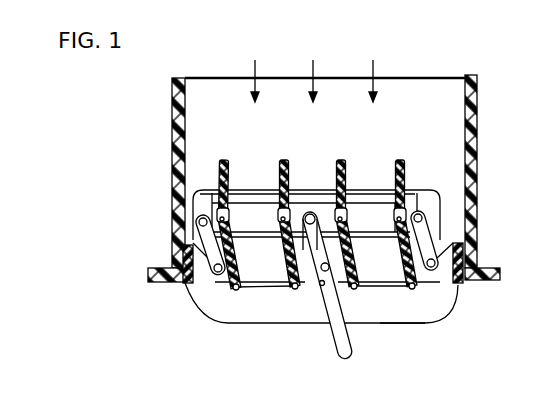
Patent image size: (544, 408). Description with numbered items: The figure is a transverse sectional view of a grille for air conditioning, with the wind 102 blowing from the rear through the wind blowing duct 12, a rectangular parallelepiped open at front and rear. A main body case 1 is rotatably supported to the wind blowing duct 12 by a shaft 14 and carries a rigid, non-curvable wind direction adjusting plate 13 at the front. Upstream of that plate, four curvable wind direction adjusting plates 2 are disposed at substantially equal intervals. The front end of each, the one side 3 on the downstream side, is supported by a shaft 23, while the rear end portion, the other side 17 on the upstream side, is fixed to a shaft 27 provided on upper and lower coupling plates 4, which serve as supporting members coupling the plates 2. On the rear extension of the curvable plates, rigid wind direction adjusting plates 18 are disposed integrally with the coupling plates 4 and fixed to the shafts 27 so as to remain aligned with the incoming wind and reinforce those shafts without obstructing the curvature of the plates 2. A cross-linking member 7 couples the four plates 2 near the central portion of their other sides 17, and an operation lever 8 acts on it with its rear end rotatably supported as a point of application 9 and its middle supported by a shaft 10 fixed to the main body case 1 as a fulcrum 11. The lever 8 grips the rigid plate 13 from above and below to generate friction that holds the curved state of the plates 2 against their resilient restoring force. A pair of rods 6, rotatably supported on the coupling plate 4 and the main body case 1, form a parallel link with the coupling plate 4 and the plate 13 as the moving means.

The main body case 1 is at (455, 290).
The curvable wind direction adjusting plate 2 is at (402, 266).
The one side 3 is at (410, 287).
The coupling plate 4 is at (255, 192).
The rod 6 is at (428, 228).
The cross-linking member 7 is at (360, 192).
The operation lever 8 is at (338, 339).
The point of application 9 is at (311, 212).
The shaft 10 is at (303, 292).
The fulcrum 11 is at (322, 284).
The wind blowing duct 12 is at (478, 107).
The wind direction adjusting plate 13 is at (411, 324).
The shaft 14 is at (476, 252).
The other side 17 is at (368, 237).
The rigid wind direction adjusting plate 18 is at (400, 160).
The shaft 23 is at (411, 288).
The shaft 27 is at (394, 218).
The wind 102 is at (382, 63).